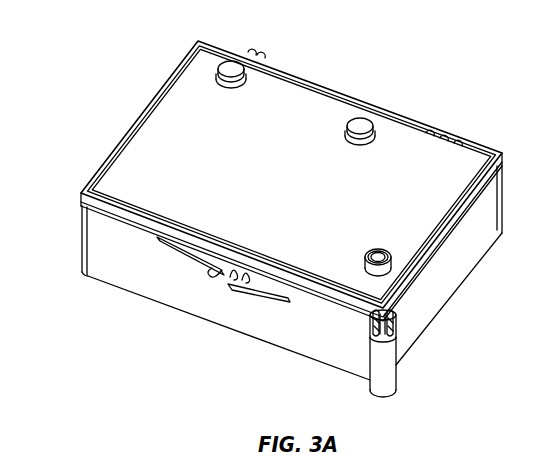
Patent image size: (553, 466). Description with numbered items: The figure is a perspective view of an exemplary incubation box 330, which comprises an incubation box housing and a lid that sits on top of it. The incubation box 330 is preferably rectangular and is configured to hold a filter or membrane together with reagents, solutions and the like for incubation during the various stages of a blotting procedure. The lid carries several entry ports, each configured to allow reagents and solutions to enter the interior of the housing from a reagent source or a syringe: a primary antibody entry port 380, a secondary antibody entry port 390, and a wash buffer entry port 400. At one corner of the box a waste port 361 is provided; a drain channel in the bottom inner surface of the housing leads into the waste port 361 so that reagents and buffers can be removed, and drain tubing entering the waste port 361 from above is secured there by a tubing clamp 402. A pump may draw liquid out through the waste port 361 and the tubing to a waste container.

The incubation box 330 is at (112, 66).
The primary antibody entry port 380 is at (233, 74).
The secondary antibody entry port 390 is at (361, 125).
The wash buffer entry port 400 is at (392, 266).
The tubing clamp 402 is at (398, 320).
The waste port 361 is at (377, 373).